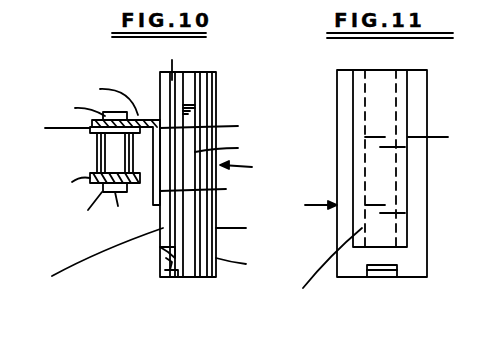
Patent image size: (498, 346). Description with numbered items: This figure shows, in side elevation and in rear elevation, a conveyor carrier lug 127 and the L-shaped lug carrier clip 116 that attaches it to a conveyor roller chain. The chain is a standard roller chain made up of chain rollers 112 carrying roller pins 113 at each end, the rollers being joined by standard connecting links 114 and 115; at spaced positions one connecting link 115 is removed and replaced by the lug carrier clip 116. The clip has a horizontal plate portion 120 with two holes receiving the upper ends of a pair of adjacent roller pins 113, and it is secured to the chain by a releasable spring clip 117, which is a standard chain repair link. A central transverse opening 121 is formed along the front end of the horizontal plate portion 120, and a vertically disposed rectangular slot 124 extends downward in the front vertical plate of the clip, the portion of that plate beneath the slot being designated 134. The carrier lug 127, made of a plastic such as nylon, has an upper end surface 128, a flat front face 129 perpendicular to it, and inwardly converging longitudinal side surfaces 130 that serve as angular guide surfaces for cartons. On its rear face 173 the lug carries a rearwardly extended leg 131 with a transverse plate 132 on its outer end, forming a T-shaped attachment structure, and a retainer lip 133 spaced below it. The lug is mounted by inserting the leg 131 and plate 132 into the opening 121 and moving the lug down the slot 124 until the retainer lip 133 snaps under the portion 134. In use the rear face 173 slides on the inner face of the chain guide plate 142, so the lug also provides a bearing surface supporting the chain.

In FIG. 10, the chain roller 112 is at (98, 150).
In FIG. 10, the roller pin 113 is at (127, 211).
In FIG. 10, the roller chain connecting link 114 is at (50, 164).
In FIG. 10, the roller chain connecting link 115 is at (81, 217).
In FIG. 10, the L-shaped lug carrier clip 116 is at (150, 115).
In FIG. 10, the releasable spring clip 117 is at (72, 112).
In FIG. 10, the horizontal plate portion 120 is at (101, 94).
In FIG. 10, the central transverse opening 121 is at (219, 125).
In FIG. 10, the rectangular slot 124 is at (162, 247).
In FIG. 10, the carrier lug 127 is at (255, 165).
In FIG. 11, the carrier lug 127 is at (304, 202).
In FIG. 10, the upper end surface 128 is at (216, 72).
In FIG. 11, the upper end surface 128 is at (382, 173).
In FIG. 10, the flat front face 129 is at (251, 229).
In FIG. 10, the longitudinal side surface 130 is at (251, 265).
In FIG. 10, the leg 131 is at (177, 60).
In FIG. 11, the leg 131 is at (397, 105).
In FIG. 10, the transverse plate 132 is at (97, 264).
In FIG. 11, the transverse plate 132 is at (448, 139).
In FIG. 10, the retainer lip 133 is at (169, 272).
In FIG. 11, the retainer lip 133 is at (383, 277).
In FIG. 10, the portion of the front plate beneath the vertical slot 134 is at (168, 260).
In FIG. 10, the inner chain guide plate 142 is at (213, 184).
In FIG. 10, the rear face 173 is at (236, 145).
In FIG. 11, the rear face 173 is at (320, 266).